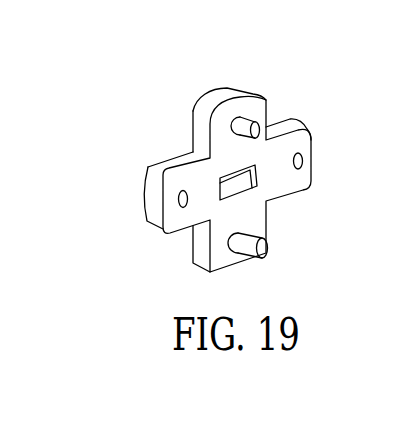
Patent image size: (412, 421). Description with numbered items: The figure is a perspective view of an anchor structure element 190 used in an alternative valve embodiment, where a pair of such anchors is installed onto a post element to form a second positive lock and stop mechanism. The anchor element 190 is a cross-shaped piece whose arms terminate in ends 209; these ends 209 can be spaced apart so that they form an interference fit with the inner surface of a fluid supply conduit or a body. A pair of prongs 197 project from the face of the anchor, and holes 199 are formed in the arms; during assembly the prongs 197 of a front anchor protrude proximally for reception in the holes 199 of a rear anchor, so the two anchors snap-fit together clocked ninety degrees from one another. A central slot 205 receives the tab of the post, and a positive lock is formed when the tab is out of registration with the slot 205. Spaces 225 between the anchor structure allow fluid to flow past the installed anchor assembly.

The anchor structure element 190 is at (234, 160).
The prongs 197 is at (243, 131).
The holes 199 is at (181, 206).
The slot 205 is at (245, 180).
The ends 209 is at (232, 96).
The spaces 225 is at (190, 242).